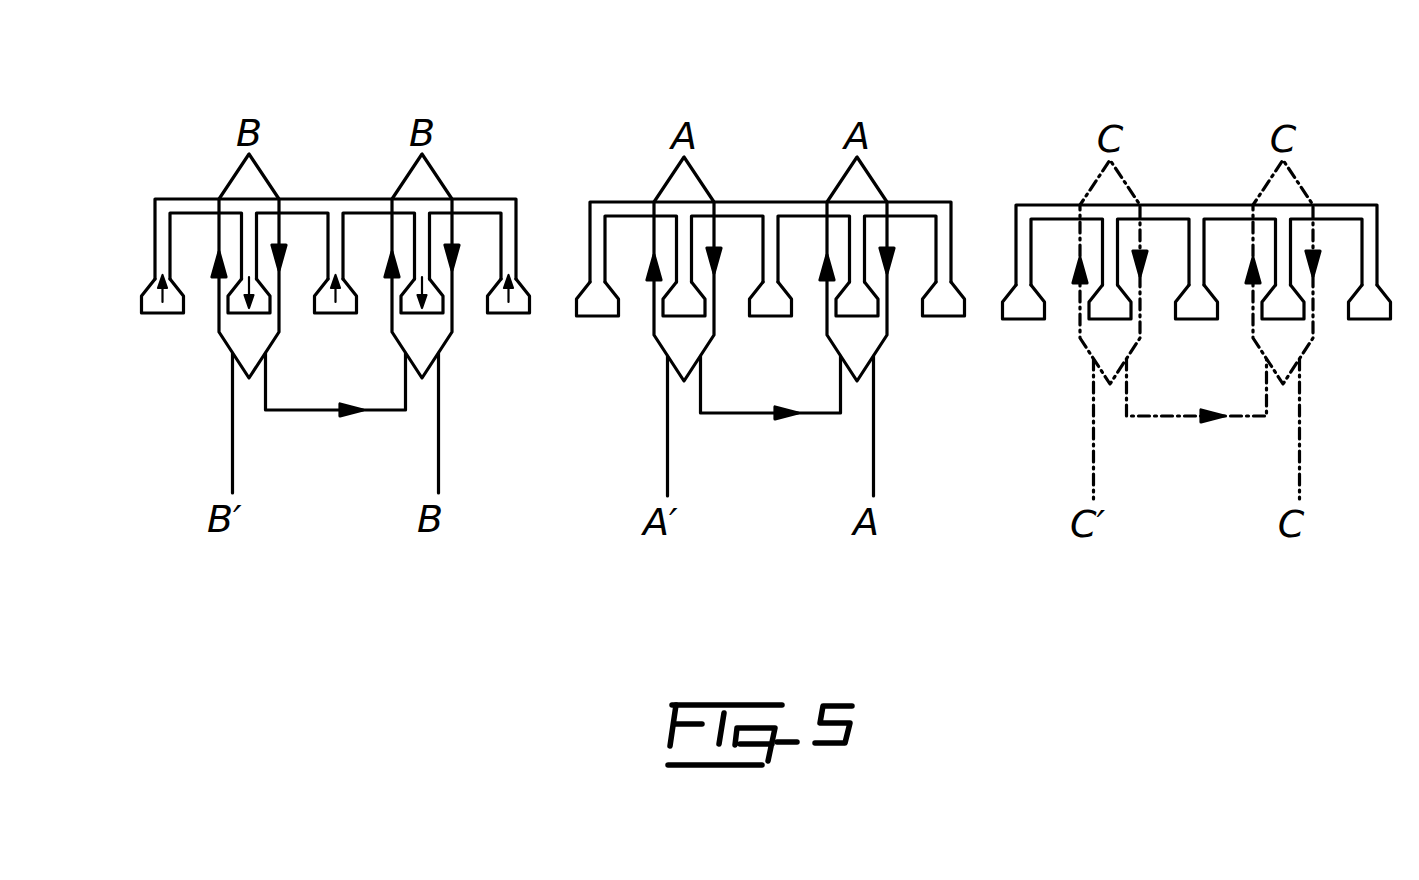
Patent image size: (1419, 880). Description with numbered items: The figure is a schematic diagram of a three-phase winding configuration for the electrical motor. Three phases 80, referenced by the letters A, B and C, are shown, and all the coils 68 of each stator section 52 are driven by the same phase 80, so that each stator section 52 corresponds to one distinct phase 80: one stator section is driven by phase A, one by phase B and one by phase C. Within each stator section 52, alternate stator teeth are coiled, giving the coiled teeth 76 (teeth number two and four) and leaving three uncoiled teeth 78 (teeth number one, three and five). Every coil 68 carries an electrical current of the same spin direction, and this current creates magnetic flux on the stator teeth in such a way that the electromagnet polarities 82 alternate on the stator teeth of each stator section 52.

The stator section 52 is at (620, 201).
The coil 68 is at (223, 342).
The coiled teeth 76 is at (665, 354).
The uncoiled teeth 78 is at (595, 317).
The phase 80 is at (447, 131).
The electromagnet polarities 82 is at (156, 312).